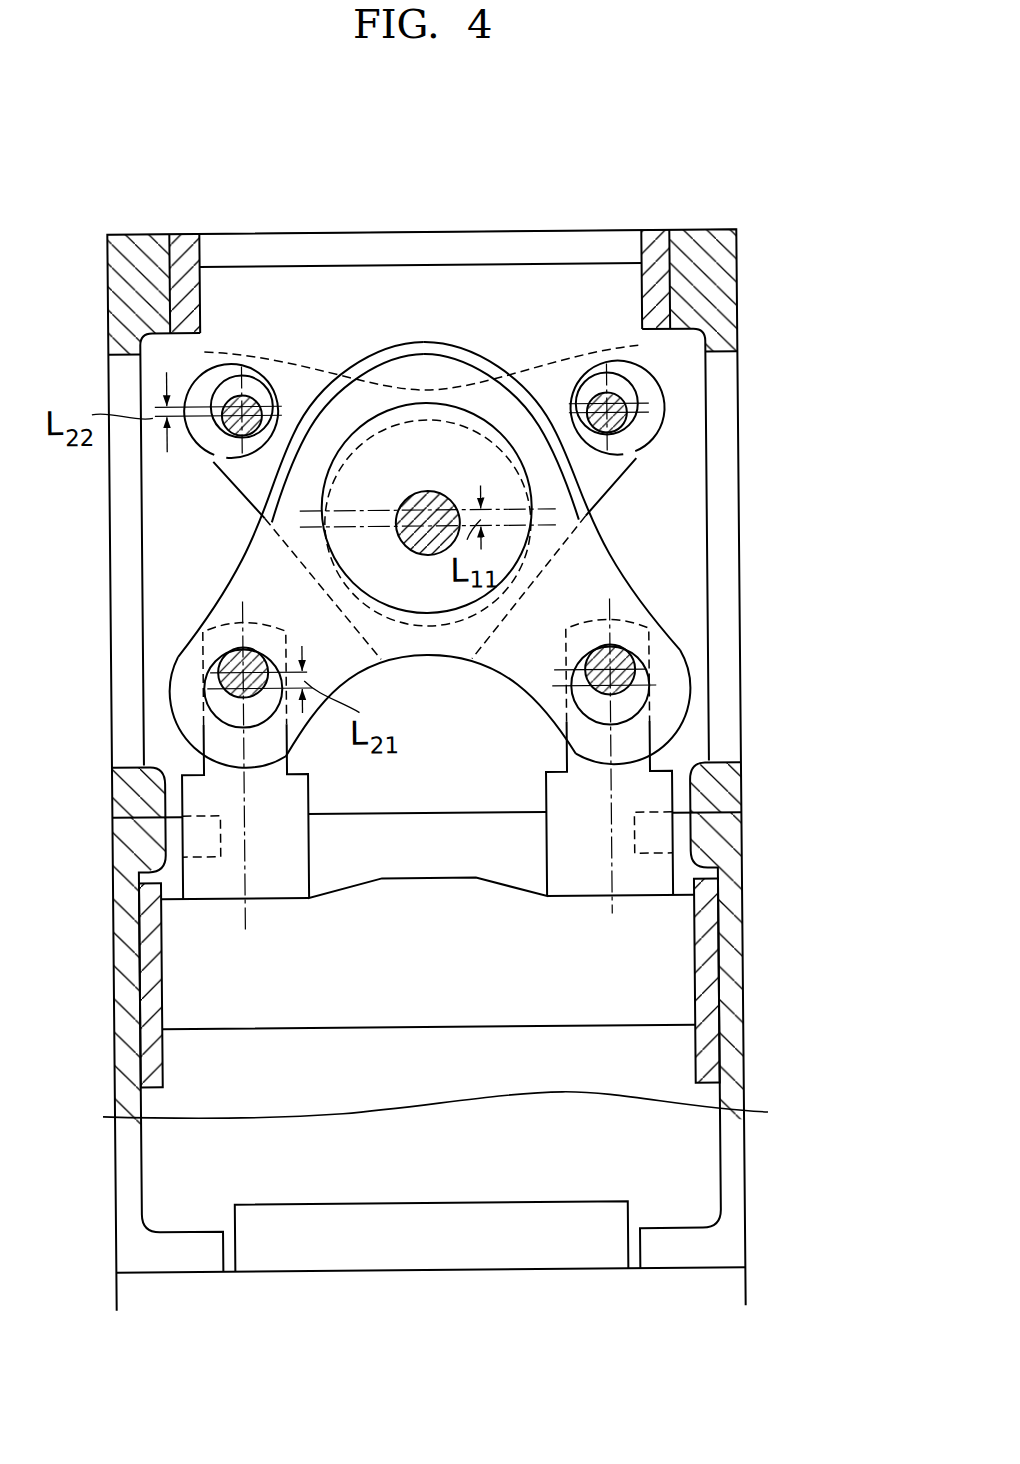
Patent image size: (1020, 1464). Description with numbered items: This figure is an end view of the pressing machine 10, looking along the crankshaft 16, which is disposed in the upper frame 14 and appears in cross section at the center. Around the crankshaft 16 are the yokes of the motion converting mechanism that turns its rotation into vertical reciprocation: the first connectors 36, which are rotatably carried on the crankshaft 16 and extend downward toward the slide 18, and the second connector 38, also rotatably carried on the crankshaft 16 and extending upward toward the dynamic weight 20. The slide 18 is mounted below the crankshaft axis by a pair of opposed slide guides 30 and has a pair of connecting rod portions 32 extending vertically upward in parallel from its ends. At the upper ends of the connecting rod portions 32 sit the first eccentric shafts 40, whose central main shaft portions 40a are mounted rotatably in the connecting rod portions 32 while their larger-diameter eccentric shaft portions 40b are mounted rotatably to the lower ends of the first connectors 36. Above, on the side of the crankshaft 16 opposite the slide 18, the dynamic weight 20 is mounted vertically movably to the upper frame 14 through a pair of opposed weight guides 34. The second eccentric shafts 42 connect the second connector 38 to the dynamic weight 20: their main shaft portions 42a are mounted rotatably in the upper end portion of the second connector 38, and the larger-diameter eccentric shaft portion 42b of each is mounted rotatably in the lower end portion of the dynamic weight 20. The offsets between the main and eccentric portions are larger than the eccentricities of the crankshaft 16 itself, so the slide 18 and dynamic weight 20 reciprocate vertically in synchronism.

The pressing machine 10 is at (660, 227).
The upper frame 14 is at (725, 243).
The crankshaft 16 is at (412, 547).
The slide 18 is at (345, 1013).
The dynamic weight 20 is at (430, 280).
The slide guides 30 is at (153, 1063).
The connecting rod portions 32 is at (289, 876).
The weight guides 34 is at (192, 244).
The first connectors 36 is at (602, 560).
The second connector 38 is at (242, 487).
The first eccentric shafts 40 is at (222, 650).
The main shaft portions 40a is at (556, 722).
The eccentric shaft portions 40b is at (630, 705).
The second eccentric shafts 42 is at (254, 373).
The main shaft portions 42a is at (624, 410).
The eccentric shaft portion 42b is at (586, 396).